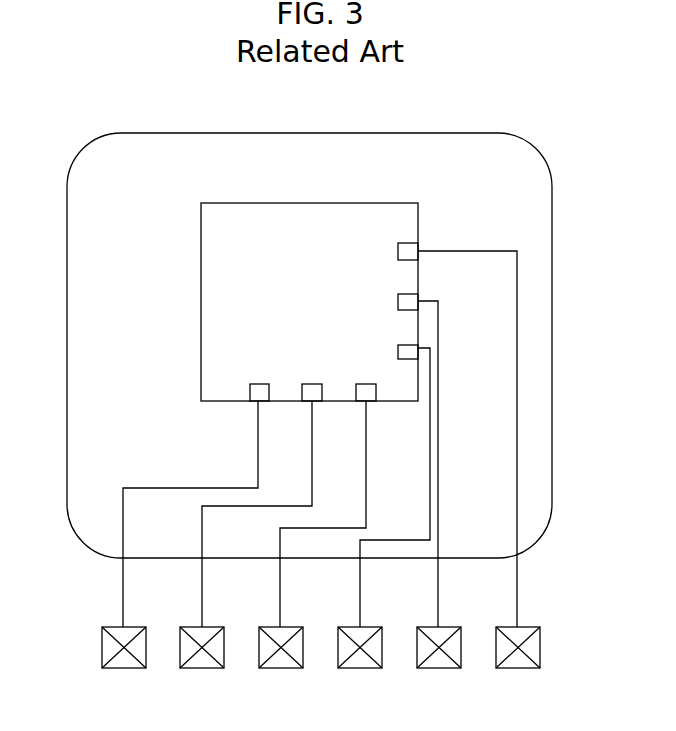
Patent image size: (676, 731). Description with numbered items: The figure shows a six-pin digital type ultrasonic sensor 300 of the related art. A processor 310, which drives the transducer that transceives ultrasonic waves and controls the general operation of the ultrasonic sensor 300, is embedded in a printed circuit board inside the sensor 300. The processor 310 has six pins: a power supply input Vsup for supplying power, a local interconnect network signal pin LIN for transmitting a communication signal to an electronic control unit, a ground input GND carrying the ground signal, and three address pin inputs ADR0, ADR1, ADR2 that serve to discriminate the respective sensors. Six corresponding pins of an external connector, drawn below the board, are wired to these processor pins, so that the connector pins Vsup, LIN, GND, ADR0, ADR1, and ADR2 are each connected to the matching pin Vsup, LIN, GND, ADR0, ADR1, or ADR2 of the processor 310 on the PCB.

The ultrasonic sensor 300 is at (468, 133).
The processor 310 is at (378, 203).
The power supply input Vsup is at (180, 554).
The local interconnect network signal pin LIN is at (246, 554).
The ground input GND is at (312, 554).
The address pin input ADR0 is at (384, 527).
The address pin input ADR1 is at (442, 504).
The address pin input ADR2 is at (481, 479).